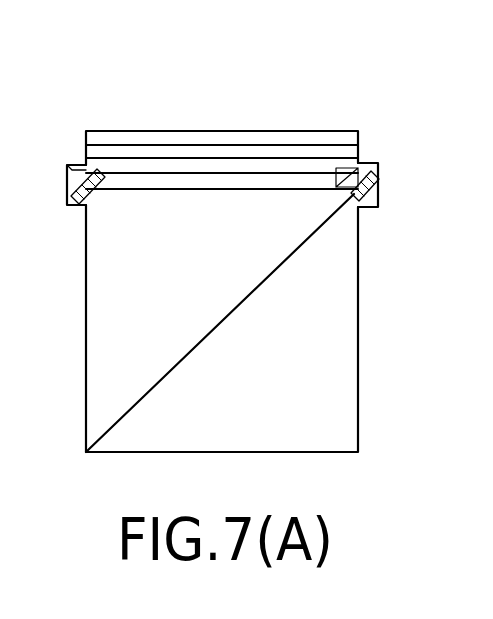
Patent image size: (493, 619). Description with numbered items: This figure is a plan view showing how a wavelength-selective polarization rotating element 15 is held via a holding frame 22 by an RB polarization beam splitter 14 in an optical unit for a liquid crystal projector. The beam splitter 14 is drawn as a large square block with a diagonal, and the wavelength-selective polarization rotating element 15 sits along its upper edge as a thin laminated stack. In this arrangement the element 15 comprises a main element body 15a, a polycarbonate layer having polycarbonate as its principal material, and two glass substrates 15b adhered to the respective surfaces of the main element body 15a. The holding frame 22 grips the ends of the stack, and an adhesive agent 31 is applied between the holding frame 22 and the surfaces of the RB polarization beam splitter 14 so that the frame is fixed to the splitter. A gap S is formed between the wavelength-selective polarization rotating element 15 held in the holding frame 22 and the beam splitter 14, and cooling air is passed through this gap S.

The RB polarization beam splitter 14 is at (341, 383).
The wavelength-selective polarization rotating element 15 is at (288, 117).
The main element body 15a is at (158, 131).
The glass substrate 15b is at (274, 131).
The gap S is at (290, 184).
The holding frame 22 is at (67, 172).
The adhesive agent 31 is at (80, 208).